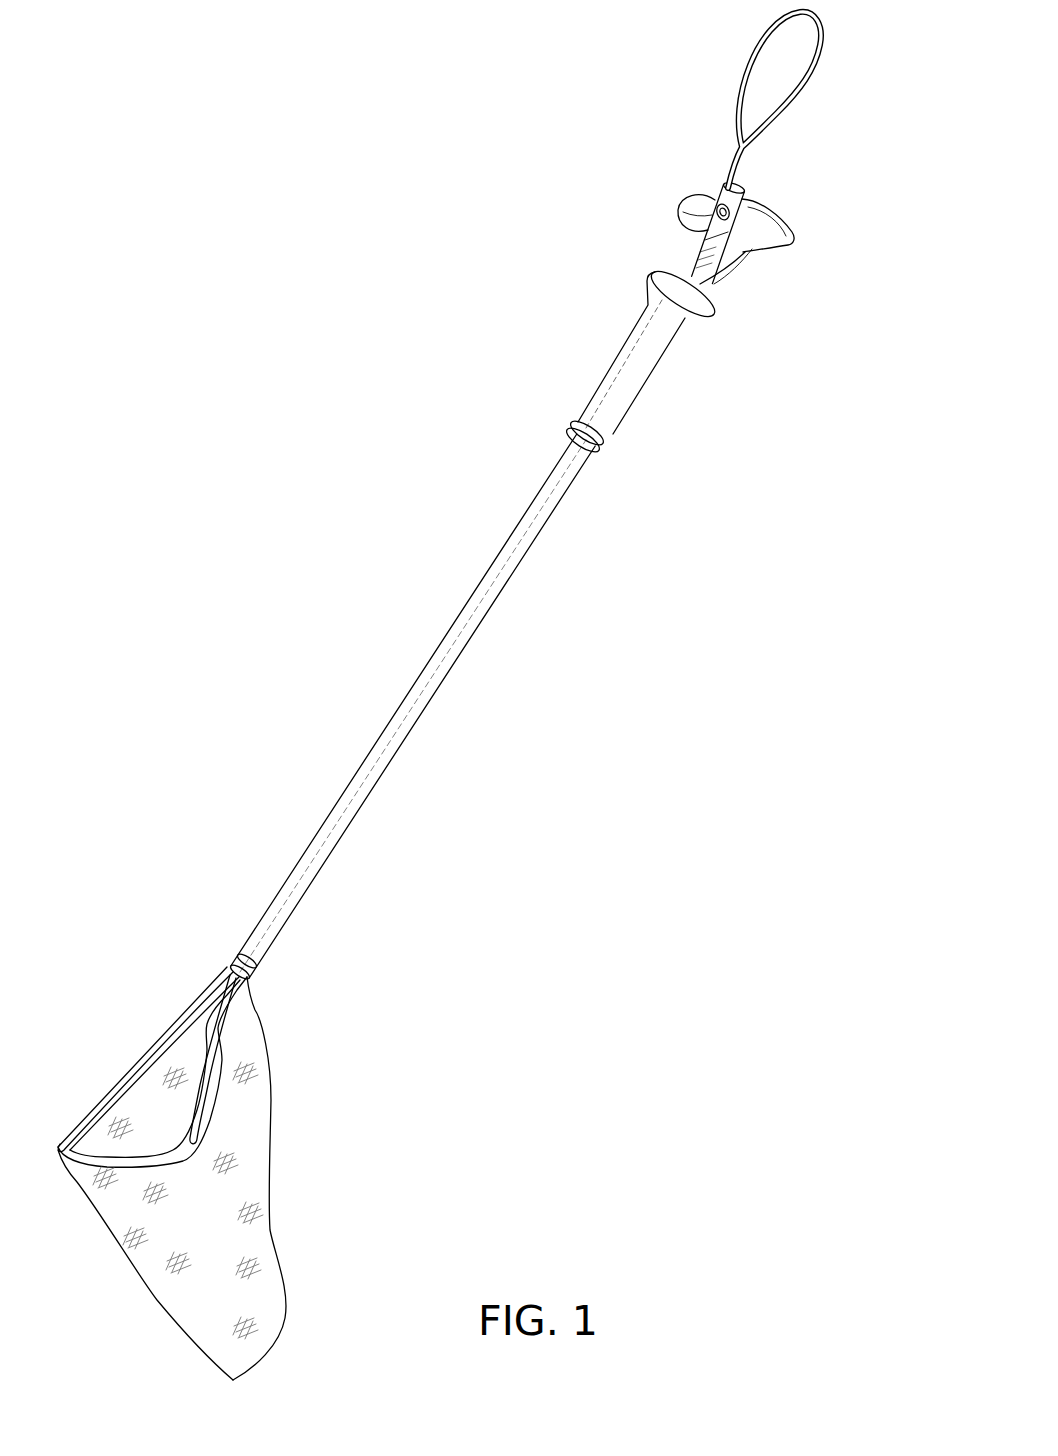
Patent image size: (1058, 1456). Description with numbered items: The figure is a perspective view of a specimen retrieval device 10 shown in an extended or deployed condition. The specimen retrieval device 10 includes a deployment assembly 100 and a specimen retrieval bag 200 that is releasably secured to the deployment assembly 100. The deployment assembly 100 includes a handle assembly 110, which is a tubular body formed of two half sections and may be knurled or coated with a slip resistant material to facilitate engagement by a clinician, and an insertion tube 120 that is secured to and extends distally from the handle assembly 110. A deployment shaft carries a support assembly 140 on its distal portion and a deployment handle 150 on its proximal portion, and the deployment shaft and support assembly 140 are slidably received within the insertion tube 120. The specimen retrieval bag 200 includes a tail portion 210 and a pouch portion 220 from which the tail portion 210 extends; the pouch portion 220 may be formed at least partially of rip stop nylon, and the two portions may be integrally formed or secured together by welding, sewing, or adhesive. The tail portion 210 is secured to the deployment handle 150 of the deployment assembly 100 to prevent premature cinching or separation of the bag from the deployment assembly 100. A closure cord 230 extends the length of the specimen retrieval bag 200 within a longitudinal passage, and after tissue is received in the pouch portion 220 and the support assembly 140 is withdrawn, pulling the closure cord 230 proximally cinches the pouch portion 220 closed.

The specimen retrieval device 10 is at (390, 425).
The deployment assembly 100 is at (573, 618).
The handle assembly 110 is at (640, 410).
The insertion tube 120 is at (450, 683).
The support assembly 140 is at (207, 1003).
The deployment handle 150 is at (742, 257).
The specimen retrieval bag 200 is at (297, 1112).
The tail portion 210 is at (683, 248).
The pouch portion 220 is at (282, 1245).
The closure cord 230 is at (830, 22).